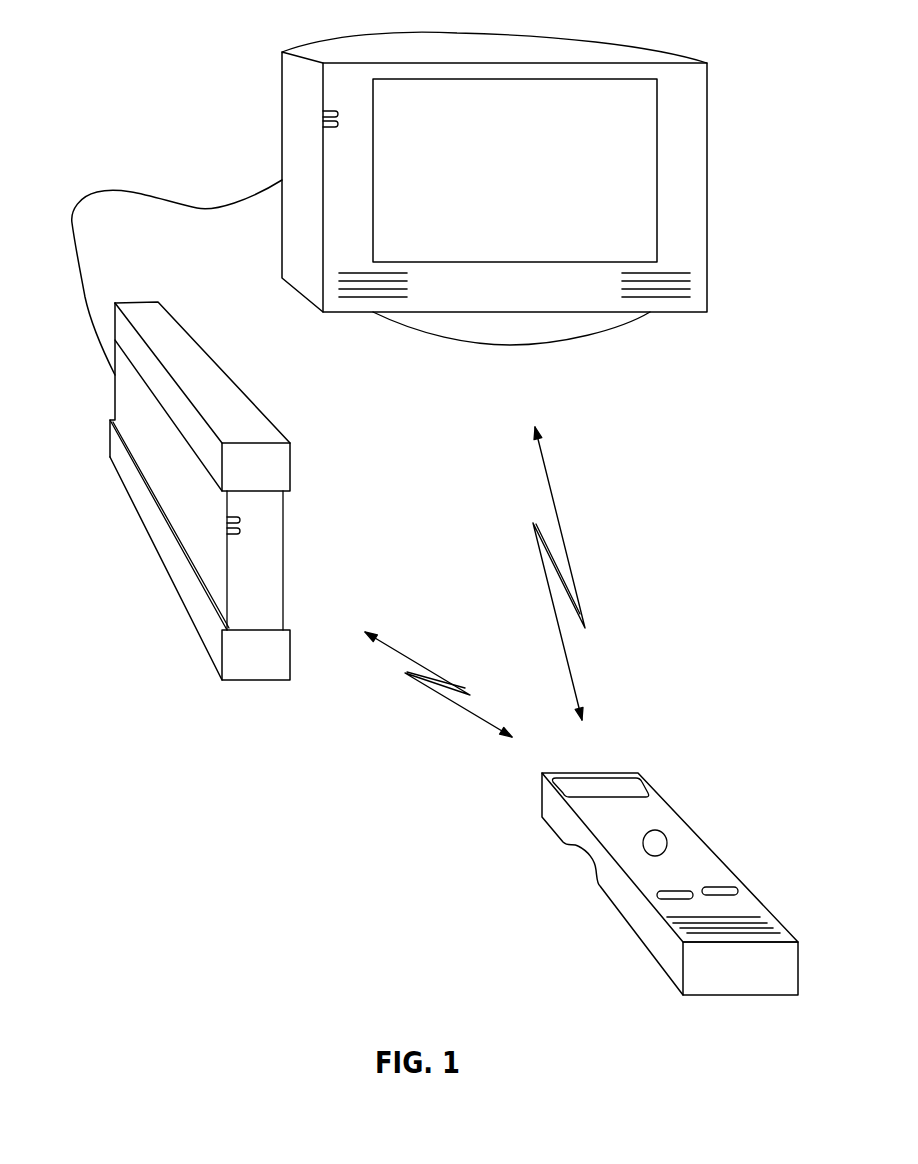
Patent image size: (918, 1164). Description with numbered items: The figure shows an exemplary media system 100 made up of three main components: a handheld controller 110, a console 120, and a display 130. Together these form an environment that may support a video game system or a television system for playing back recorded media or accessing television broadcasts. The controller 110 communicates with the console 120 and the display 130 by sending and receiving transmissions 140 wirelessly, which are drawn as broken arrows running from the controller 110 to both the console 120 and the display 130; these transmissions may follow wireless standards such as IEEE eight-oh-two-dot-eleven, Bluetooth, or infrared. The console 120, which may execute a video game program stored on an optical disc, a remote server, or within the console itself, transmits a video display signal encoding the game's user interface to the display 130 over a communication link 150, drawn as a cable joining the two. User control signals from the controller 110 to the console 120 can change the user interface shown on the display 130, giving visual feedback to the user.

The media system 100 is at (150, 822).
The controller 110 is at (620, 912).
The console 120 is at (162, 563).
The display 130 is at (707, 188).
The transmissions 140 is at (563, 530).
The communication link 150 is at (122, 188).